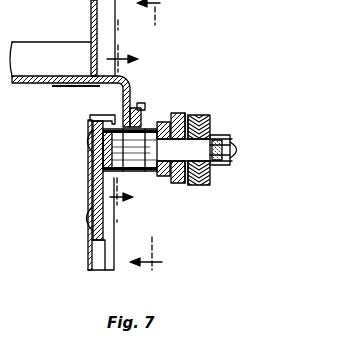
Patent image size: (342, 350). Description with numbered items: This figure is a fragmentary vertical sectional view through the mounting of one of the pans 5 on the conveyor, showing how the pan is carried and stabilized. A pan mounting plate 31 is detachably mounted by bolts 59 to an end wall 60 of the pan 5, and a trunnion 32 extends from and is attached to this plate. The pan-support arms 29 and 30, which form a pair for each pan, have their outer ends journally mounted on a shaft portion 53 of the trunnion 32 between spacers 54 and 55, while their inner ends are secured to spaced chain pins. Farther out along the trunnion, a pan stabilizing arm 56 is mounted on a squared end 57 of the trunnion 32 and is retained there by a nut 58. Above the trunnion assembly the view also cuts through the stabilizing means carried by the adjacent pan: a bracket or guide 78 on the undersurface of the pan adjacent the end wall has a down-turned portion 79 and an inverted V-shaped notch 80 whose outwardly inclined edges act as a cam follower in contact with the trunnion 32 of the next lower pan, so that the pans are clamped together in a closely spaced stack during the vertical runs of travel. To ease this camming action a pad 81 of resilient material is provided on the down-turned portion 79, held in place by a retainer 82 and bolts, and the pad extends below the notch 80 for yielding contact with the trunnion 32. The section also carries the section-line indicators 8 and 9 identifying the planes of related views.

The pan 5 is at (25, 84).
The section line 8- 8 is at (152, 136).
The section line 9- 9 is at (122, 121).
The pan-support arm 29 is at (178, 191).
The pan-support arm 30 is at (187, 151).
The pan mounting plate 31 is at (91, 191).
The trunnion 32 is at (149, 172).
The shaft portion 53 is at (165, 178).
The spacer 54 is at (173, 114).
The spacer 55 is at (200, 114).
The pan stabilizing arm 56 is at (212, 131).
The squared end 57 is at (216, 162).
The nut 58 is at (226, 136).
The bolt 59 is at (85, 140).
The end wall 60 is at (92, 22).
The bracket 78 is at (95, 88).
The down-turned portion 79 is at (125, 82).
The inverted V-shaped notch 80 is at (121, 116).
The pad 81 is at (132, 109).
The retainer 82 is at (143, 107).